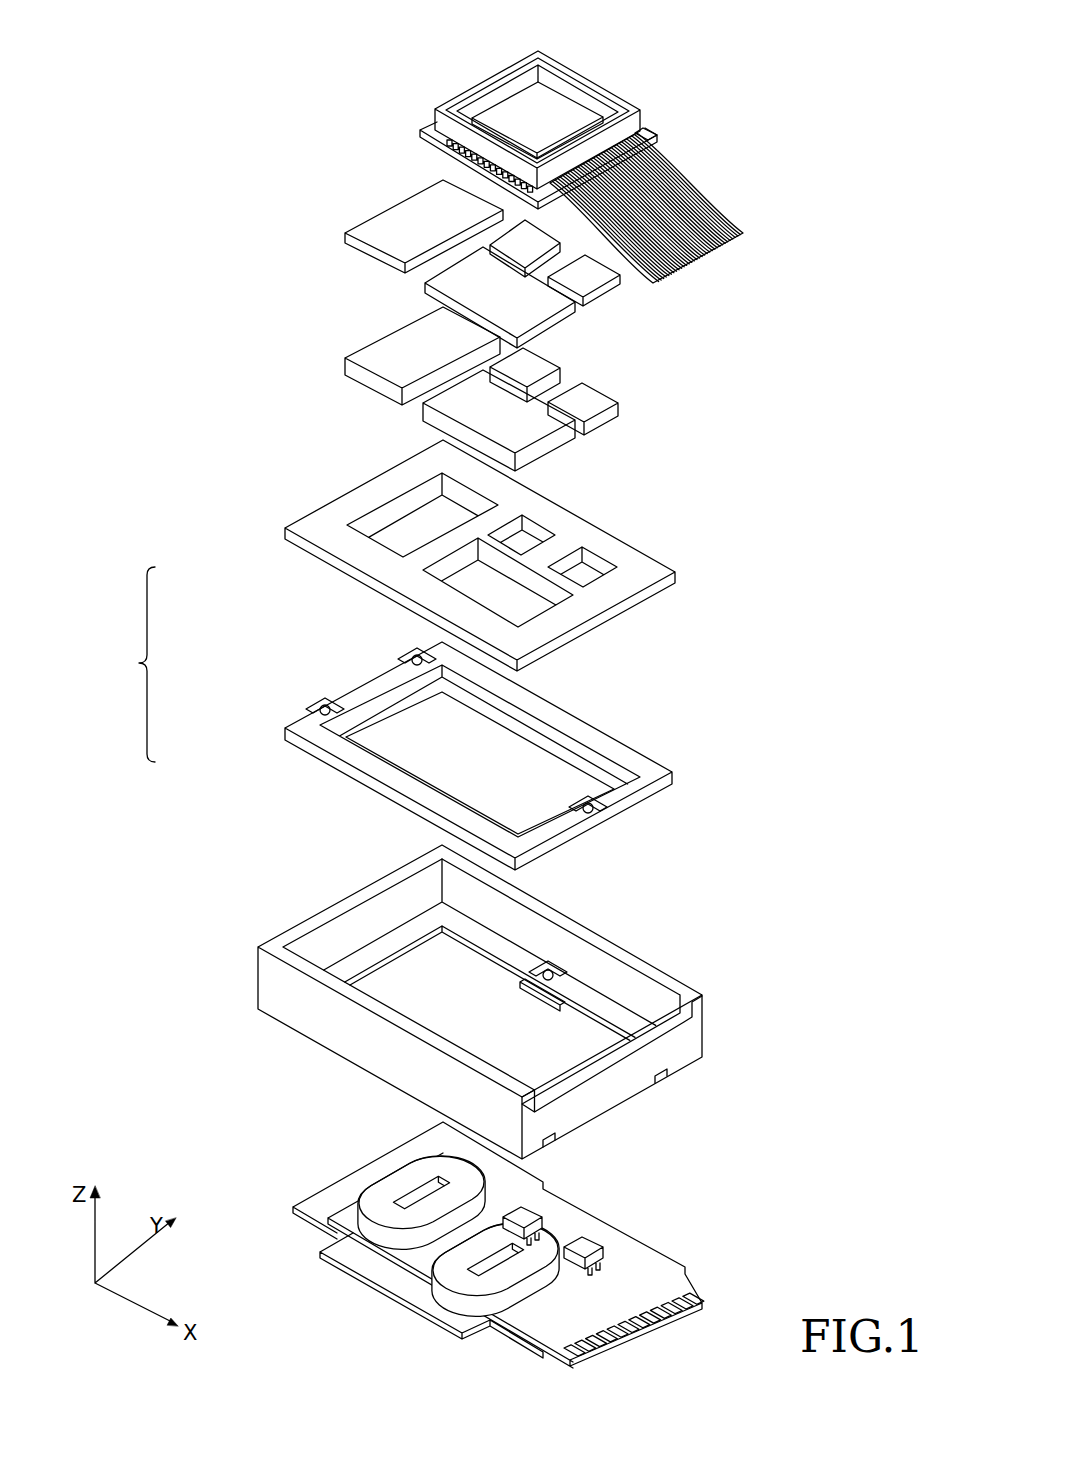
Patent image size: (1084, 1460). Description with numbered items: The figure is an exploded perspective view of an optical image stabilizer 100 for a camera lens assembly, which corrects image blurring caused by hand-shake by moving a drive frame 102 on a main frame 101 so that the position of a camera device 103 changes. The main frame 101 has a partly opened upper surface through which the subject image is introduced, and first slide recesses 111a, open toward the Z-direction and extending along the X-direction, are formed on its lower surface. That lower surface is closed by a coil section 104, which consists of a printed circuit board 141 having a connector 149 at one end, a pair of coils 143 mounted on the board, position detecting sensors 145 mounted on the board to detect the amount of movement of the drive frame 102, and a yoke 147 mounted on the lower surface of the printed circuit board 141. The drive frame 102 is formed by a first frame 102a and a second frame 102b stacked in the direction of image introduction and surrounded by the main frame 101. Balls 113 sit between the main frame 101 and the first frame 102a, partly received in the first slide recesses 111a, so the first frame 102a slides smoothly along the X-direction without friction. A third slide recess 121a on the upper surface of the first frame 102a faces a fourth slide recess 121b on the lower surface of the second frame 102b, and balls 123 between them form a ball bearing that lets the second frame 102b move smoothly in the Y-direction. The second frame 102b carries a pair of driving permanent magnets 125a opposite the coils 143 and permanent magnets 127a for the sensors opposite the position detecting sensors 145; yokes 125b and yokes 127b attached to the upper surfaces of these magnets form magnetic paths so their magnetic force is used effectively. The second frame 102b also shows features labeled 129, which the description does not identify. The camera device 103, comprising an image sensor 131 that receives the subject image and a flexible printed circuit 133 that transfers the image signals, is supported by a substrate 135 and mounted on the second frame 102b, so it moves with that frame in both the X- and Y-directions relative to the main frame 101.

The optical image stabilizer 100 is at (222, 143).
The main frame 101 is at (486, 1002).
The drive frame 102 is at (128, 664).
The first frame 102a is at (438, 737).
The second frame 102b is at (471, 554).
The camera device 103 is at (584, 150).
The coil section 104 is at (508, 1243).
The first slide recesses 111a is at (562, 987).
The balls 113 is at (558, 972).
The third slide recess 121a is at (410, 666).
The fourth slide recess 121b is at (506, 554).
The balls 123 is at (412, 660).
The driving permanent magnets 125a is at (392, 340).
The yokes 125b is at (392, 212).
The permanent magnets for sensor 127a is at (545, 366).
The yokes 127b is at (520, 233).
The openings 129 is at (408, 520).
The image sensor 131 is at (545, 84).
The flexible printed circuit 133 is at (700, 185).
The substrate 135 is at (660, 133).
The printed circuit board 141 is at (650, 1292).
The coils 143 is at (390, 1192).
The position detecting sensors 145 is at (525, 1212).
The yoke 147 is at (440, 1313).
The connector 149 is at (648, 1334).